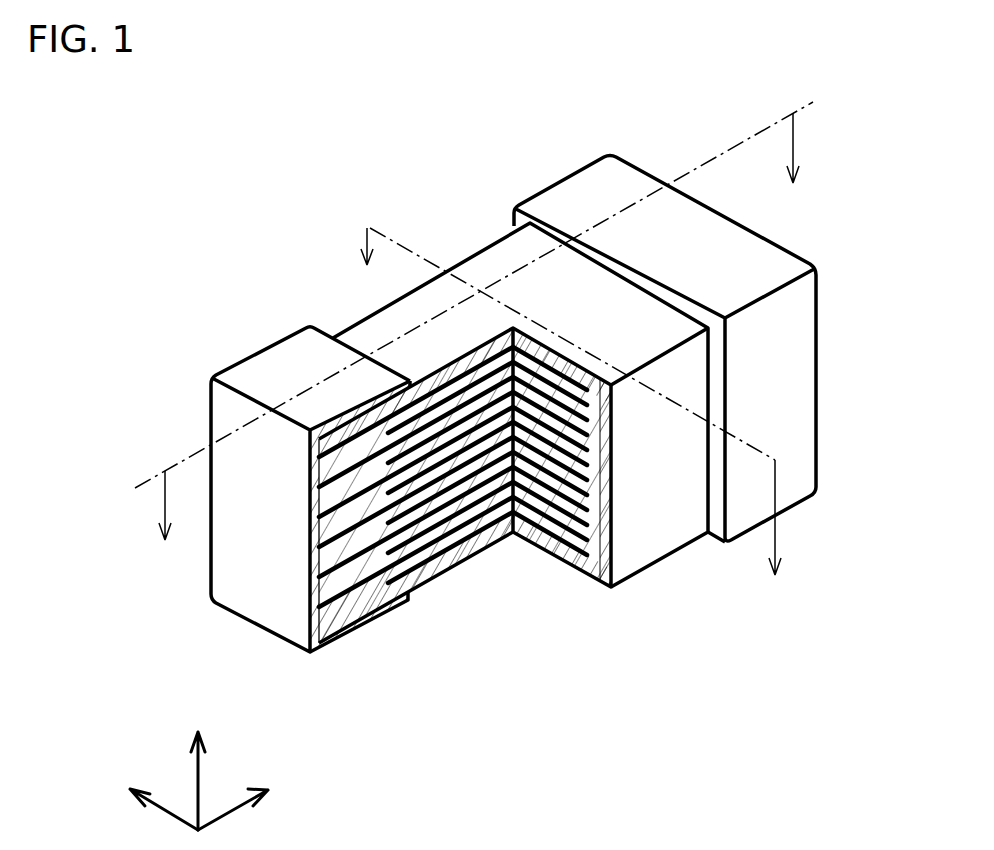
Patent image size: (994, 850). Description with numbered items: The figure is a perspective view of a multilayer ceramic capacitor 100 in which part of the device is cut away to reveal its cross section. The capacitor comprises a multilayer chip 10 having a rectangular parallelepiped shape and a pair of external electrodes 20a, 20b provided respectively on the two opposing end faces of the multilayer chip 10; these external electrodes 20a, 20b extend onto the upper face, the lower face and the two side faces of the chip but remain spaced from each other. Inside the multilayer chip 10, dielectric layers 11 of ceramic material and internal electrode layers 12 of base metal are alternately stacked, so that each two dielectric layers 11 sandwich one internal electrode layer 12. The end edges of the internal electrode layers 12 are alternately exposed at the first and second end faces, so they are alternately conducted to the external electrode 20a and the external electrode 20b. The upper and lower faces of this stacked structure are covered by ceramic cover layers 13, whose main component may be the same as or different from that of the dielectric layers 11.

The multilayer ceramic capacitor 100 is at (920, 87).
The multilayer chip 10 is at (354, 321).
The dielectric layer 11 is at (462, 559).
The internal electrode layer 12 is at (504, 534).
The cover layer 13 is at (483, 268).
The external electrode 20a is at (240, 362).
The external electrode 20b is at (570, 196).